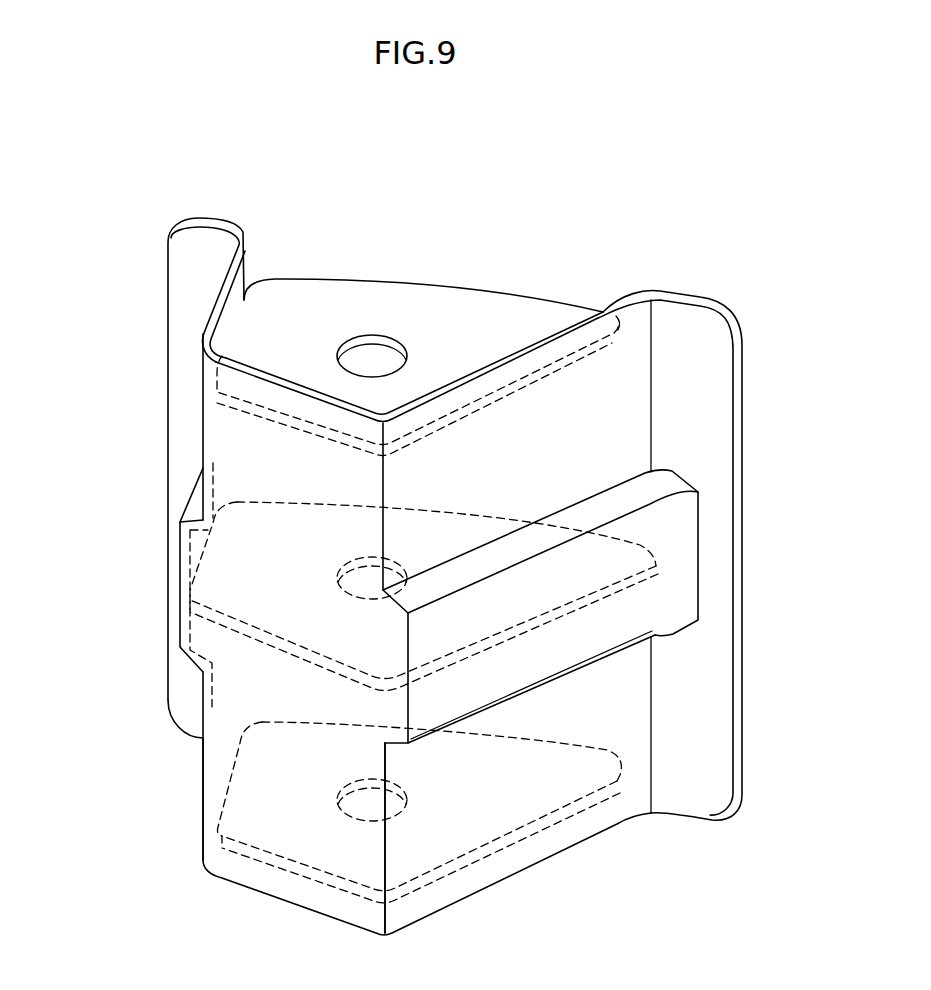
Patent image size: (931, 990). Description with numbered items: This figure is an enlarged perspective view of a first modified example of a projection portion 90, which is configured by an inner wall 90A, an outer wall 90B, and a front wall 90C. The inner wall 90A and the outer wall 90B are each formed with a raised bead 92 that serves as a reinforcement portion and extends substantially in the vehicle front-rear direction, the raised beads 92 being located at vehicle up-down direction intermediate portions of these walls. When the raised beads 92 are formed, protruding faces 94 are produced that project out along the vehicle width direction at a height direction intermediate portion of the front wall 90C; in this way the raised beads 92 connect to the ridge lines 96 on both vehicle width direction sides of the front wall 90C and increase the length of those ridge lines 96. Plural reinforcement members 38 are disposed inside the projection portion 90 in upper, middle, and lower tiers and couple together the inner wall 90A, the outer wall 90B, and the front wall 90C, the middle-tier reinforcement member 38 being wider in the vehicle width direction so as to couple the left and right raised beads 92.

The projection portion 90 is at (148, 858).
The inner wall 90A is at (212, 307).
The outer wall 90B is at (523, 795).
The front wall 90C is at (272, 837).
The reinforcement member 38 is at (503, 305).
The raised bead 92 is at (180, 627).
The protruding face 94 is at (196, 541).
The ridge line 96 is at (203, 785).